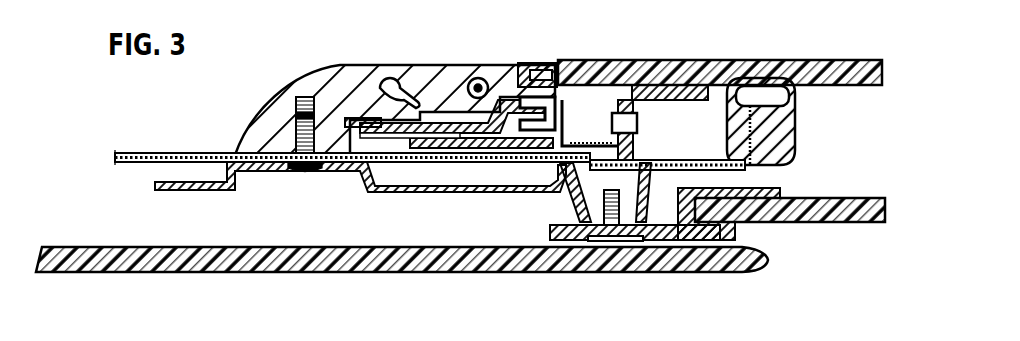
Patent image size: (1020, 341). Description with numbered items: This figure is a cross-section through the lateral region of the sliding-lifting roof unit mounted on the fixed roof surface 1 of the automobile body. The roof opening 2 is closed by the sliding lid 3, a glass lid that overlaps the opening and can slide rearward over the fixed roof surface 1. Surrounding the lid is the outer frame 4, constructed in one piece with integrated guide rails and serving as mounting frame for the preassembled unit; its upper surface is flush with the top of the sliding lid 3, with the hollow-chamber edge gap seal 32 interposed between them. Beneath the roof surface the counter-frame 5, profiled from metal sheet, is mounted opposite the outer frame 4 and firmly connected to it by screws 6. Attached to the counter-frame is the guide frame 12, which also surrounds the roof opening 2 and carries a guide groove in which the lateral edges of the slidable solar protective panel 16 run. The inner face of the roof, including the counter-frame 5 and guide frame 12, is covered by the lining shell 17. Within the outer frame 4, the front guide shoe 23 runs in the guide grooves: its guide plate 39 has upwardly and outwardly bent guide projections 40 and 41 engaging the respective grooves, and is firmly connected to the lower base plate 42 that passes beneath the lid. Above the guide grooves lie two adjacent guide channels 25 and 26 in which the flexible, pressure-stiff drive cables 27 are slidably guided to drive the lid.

The fixed roof surface 1 is at (161, 152).
The roof opening 2 is at (755, 121).
The sliding lid 3 is at (810, 59).
The outer frame 4 is at (283, 80).
The counter-frame 5 is at (165, 188).
The screws 6 is at (305, 170).
The guide frame 12 is at (561, 227).
The solar protective panel 16 is at (831, 223).
The lining shell 17 is at (301, 273).
The front guide shoe 23 is at (426, 125).
The guide channel 25 is at (388, 84).
The guide channel 26 is at (478, 77).
The drive cables 27 is at (497, 102).
The edge gap seal 32 is at (546, 62).
The guide plate 39 is at (460, 150).
The guide projection 40 is at (348, 166).
The guide projection 41 is at (580, 93).
The lower base plate 42 is at (425, 146).